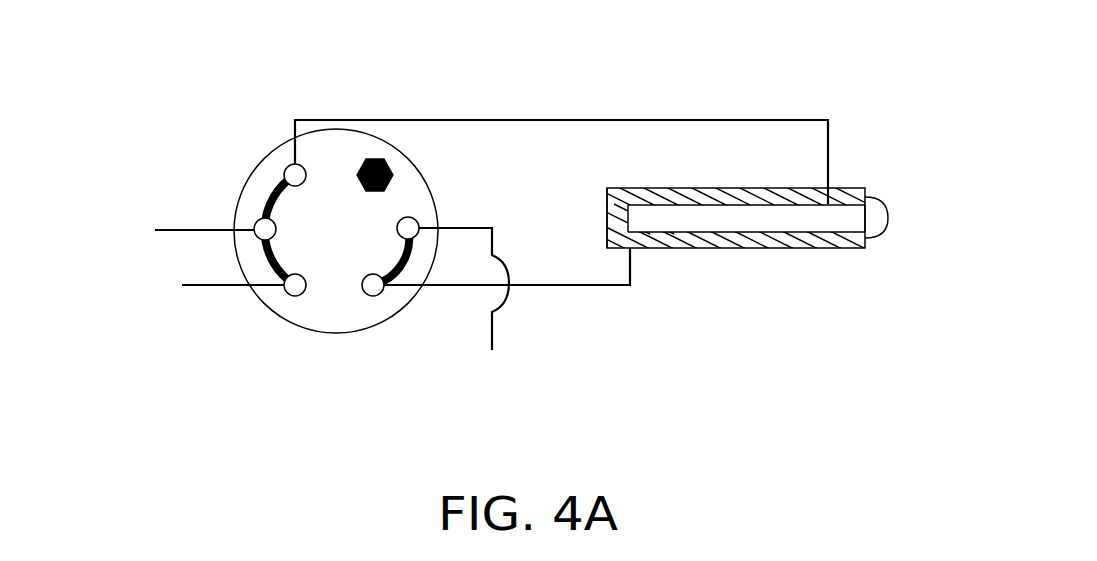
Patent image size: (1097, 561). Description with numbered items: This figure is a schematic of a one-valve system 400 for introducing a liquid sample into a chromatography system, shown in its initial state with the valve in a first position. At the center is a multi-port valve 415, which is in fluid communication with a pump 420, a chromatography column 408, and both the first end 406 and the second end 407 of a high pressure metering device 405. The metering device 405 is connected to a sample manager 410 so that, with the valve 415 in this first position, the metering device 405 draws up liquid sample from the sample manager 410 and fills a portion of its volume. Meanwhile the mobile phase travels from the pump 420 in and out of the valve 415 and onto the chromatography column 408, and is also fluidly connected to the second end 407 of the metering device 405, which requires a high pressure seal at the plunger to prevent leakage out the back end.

The one-valve system 400 is at (847, 90).
The metering device 405 is at (818, 352).
The first end of the metering device 406 is at (628, 197).
The second end of the metering device 407 is at (847, 217).
The chromatography column 408 is at (132, 333).
The sample manager 410 is at (522, 453).
The multi-port valve 415 is at (338, 315).
The pump 420 is at (138, 248).